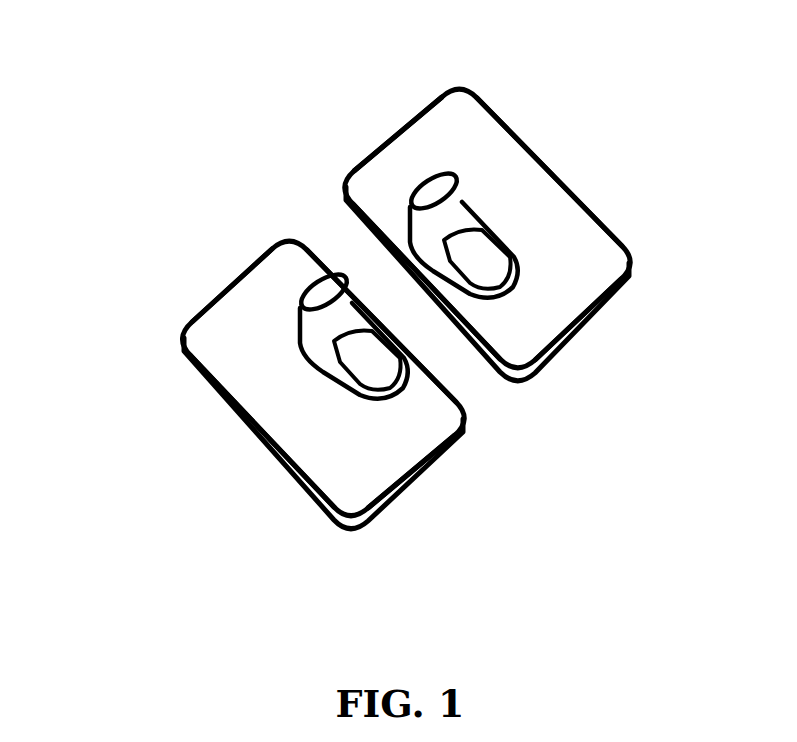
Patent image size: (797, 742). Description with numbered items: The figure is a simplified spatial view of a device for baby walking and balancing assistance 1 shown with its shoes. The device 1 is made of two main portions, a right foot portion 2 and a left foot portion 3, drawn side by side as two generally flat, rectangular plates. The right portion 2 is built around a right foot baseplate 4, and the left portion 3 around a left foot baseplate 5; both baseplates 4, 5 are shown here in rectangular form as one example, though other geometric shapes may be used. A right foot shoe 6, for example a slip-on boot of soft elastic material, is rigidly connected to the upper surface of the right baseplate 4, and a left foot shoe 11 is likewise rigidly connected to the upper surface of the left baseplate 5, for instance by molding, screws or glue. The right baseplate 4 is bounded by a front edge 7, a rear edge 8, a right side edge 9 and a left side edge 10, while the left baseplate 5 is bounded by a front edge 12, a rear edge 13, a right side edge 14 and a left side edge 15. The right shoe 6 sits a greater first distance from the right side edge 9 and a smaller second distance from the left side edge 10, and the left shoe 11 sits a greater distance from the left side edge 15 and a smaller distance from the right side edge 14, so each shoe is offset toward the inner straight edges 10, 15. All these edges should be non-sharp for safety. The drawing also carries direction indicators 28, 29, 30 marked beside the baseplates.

The device for baby walking and balancing assistance 1 is at (256, 100).
The right foot portion 2 is at (147, 328).
The left foot portion 3 is at (428, 63).
The right foot baseplate 4 is at (330, 520).
The left foot baseplate 5 is at (597, 252).
The right foot shoe 6 is at (329, 375).
The front edge of the right baseplate 7 is at (405, 482).
The rear edge of the right baseplate 8 is at (215, 293).
The right side edge of the right baseplate 9 is at (300, 493).
The left side edge of the right baseplate 10 is at (317, 250).
The left foot shoe 11 is at (482, 232).
The front edge of the left baseplate 12 is at (570, 333).
The rear edge of the left baseplate 13 is at (390, 130).
The right side edge of the left baseplate 14 is at (480, 357).
The left side edge of the left baseplate 15 is at (560, 172).
The first direction axis 28 is at (347, 253).
The second direction axis 29 is at (372, 239).
The third direction axis 30 is at (258, 223).